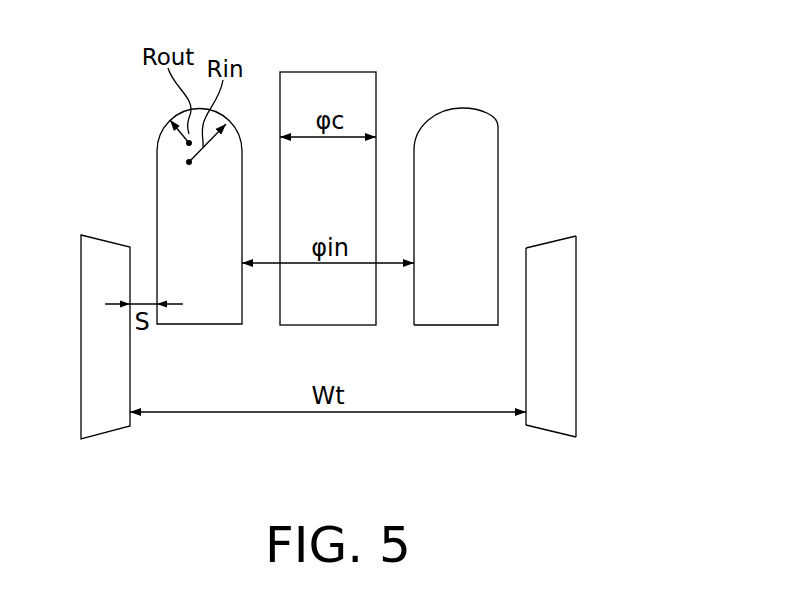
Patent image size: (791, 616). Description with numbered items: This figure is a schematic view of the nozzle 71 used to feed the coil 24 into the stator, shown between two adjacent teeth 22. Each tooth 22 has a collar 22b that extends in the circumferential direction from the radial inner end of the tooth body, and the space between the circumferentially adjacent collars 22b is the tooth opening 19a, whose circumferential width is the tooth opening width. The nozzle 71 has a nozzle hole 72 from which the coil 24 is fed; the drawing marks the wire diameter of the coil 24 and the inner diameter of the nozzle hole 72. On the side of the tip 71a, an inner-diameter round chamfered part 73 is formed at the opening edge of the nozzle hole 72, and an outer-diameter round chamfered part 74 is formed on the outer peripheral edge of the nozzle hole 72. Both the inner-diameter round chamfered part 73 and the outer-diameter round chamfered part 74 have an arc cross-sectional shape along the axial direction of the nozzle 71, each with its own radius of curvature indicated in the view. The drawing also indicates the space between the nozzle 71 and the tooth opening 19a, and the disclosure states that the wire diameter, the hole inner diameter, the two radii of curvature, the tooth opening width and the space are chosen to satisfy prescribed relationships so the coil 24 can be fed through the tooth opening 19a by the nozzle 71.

The tooth opening 19a is at (523, 418).
The tooth 22 is at (579, 375).
The collar 22b is at (563, 378).
The coil 24 is at (280, 107).
The nozzle 71 is at (501, 201).
The tip 71a is at (496, 83).
The nozzle hole 72 is at (413, 290).
The inner-diameter round chamfered part 73 is at (424, 125).
The outer-diameter round chamfered part 74 is at (495, 123).